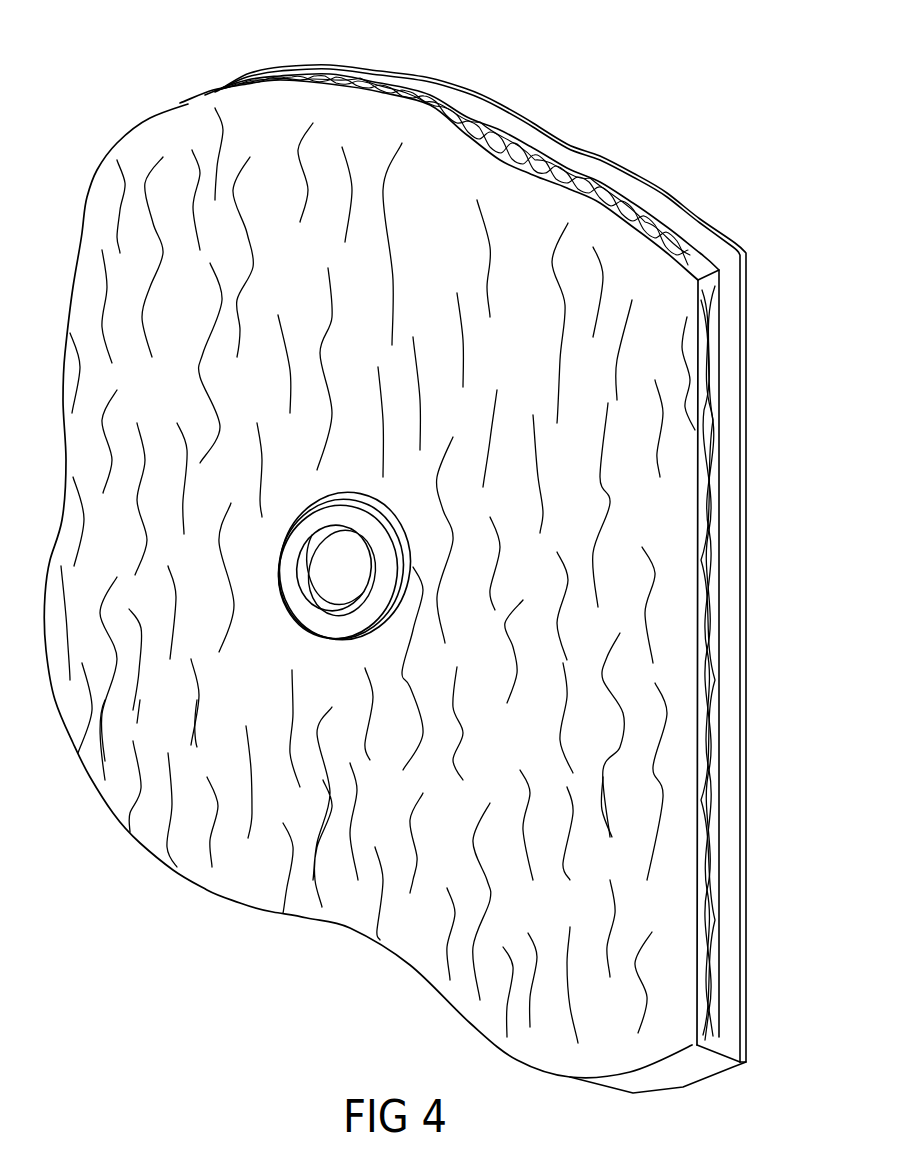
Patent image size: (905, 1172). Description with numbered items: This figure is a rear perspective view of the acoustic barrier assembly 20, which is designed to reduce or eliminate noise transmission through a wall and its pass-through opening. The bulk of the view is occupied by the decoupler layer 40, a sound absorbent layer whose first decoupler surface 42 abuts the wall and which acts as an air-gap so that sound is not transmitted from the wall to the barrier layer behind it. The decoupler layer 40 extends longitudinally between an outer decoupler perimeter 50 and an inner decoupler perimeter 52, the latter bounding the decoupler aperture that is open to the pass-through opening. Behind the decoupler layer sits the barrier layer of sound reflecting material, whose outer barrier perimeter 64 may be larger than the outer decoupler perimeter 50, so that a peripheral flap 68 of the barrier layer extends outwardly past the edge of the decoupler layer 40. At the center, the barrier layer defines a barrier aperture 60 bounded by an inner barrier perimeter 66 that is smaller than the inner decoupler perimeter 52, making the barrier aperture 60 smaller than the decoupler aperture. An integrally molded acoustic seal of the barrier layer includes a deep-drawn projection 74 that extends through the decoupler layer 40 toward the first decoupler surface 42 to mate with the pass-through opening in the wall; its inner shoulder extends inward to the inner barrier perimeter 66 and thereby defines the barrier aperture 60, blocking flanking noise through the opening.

The acoustic barrier assembly 20 is at (76, 110).
The decoupler layer 40 is at (127, 233).
The first decoupler surface 42 is at (340, 905).
The outer decoupler perimeter 50 is at (708, 932).
The inner decoupler perimeter 52 is at (368, 503).
The barrier aperture 60 is at (318, 578).
The outer barrier perimeter 64 is at (743, 417).
The inner barrier perimeter 66 is at (328, 605).
The peripheral flap 68 is at (645, 190).
The deep-drawn projection 74 is at (294, 488).